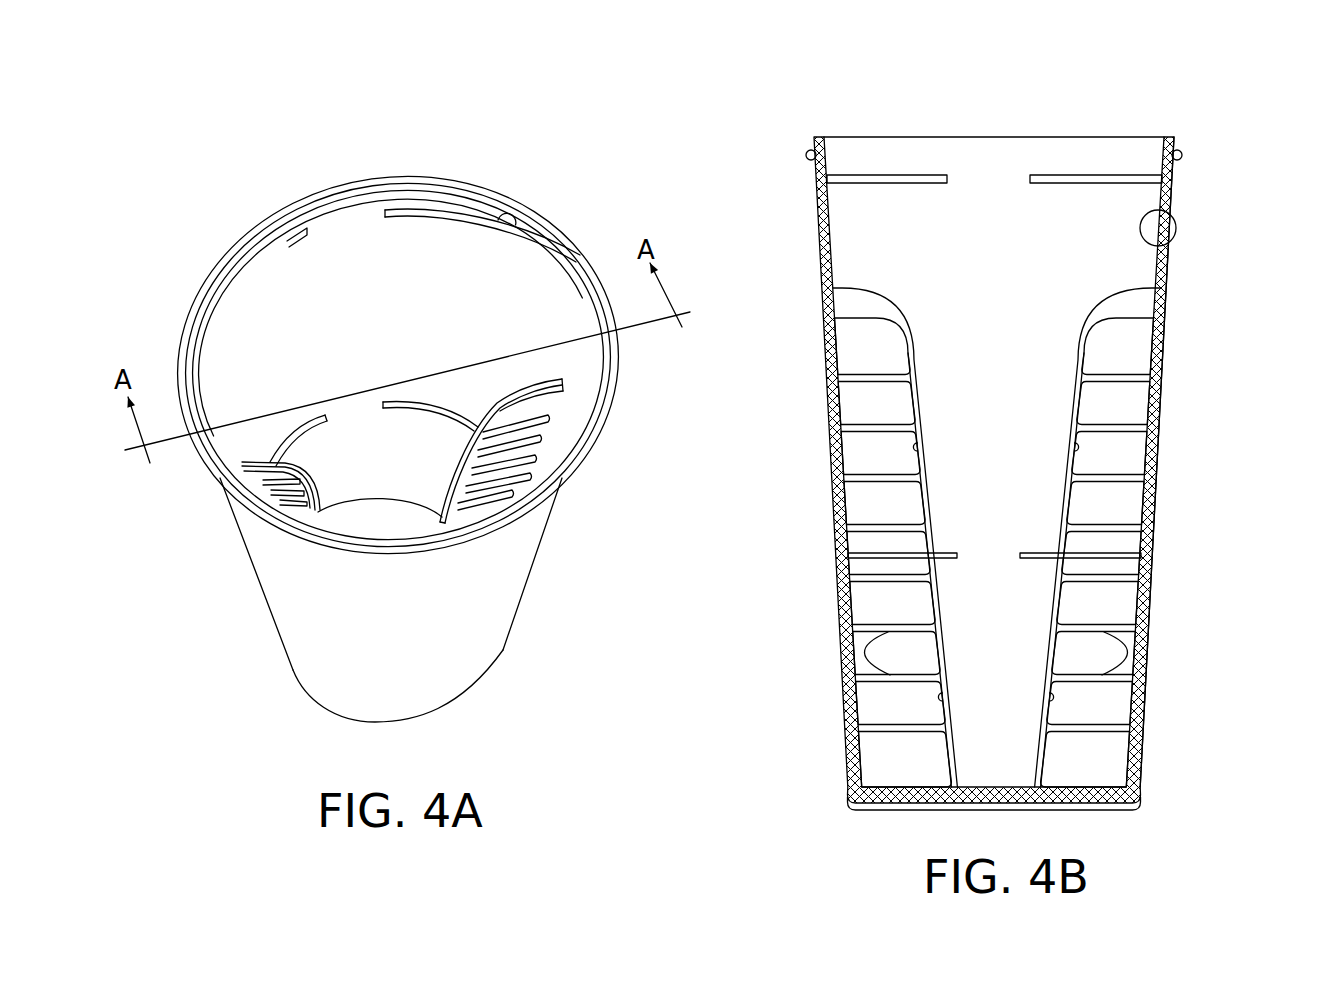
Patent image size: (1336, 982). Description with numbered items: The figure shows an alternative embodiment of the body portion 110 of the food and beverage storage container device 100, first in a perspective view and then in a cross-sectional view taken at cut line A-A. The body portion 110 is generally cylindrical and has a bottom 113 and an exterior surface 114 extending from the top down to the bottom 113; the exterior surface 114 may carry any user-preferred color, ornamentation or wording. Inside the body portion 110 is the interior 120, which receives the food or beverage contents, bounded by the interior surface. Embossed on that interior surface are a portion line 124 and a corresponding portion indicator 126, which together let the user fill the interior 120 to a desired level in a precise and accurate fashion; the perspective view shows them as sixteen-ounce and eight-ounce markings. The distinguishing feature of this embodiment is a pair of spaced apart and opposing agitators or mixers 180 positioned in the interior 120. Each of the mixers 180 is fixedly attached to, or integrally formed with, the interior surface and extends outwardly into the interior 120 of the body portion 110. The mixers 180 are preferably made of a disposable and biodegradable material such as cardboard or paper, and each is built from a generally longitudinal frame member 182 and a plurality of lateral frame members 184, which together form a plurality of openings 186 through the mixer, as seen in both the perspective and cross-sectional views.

In FIG. 4A, the food and beverage storage container device 100 is at (412, 92).
In FIG. 4B, the food and beverage storage container device 100 is at (1058, 80).
In FIG. 4B, the body portion 110 is at (1188, 183).
In FIG. 4A, the bottom 113 is at (458, 706).
In FIG. 4A, the exterior surface 114 is at (510, 576).
In FIG. 4B, the exterior surface 114 is at (1158, 438).
In FIG. 4A, the interior 120 is at (517, 234).
In FIG. 4B, the interior 120 is at (1165, 250).
In FIG. 4A, the portion line 124 is at (418, 220).
In FIG. 4B, the portion line 124 is at (908, 180).
In FIG. 4A, the portion indicator 126 is at (333, 218).
In FIG. 4B, the portion indicator 126 is at (1012, 178).
In FIG. 4A, the mixers 180 is at (402, 451).
In FIG. 4B, the mixers 180 is at (882, 286).
In FIG. 4B, the longitudinal frame member 182 is at (1078, 413).
In FIG. 4B, the lateral frame members 184 is at (872, 652).
In FIG. 4B, the openings 186 is at (1071, 450).